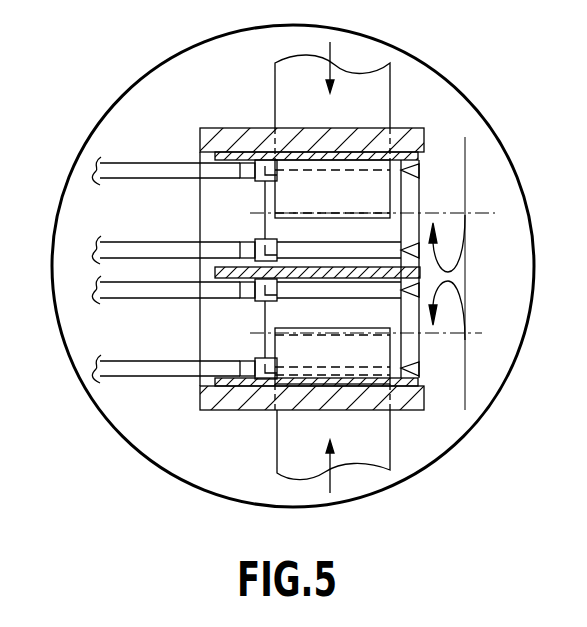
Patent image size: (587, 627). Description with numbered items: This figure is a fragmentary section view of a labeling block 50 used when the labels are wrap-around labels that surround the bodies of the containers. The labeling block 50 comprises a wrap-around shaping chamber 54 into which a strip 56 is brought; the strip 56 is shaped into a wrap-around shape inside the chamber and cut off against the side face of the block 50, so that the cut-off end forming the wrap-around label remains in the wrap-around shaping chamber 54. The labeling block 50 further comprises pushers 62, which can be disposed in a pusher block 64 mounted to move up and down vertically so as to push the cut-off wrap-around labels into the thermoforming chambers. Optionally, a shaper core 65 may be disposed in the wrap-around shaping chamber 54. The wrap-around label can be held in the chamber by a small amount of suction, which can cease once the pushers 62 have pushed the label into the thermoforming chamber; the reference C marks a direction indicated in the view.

The labeling block 50 is at (413, 137).
The wrap-around shaping chamber 54 is at (368, 154).
The strip 56 is at (285, 82).
The pusher 62 is at (136, 170).
The pusher block 64 is at (221, 129).
The shaper core 65 is at (272, 227).
The direction of rotation C is at (488, 213).